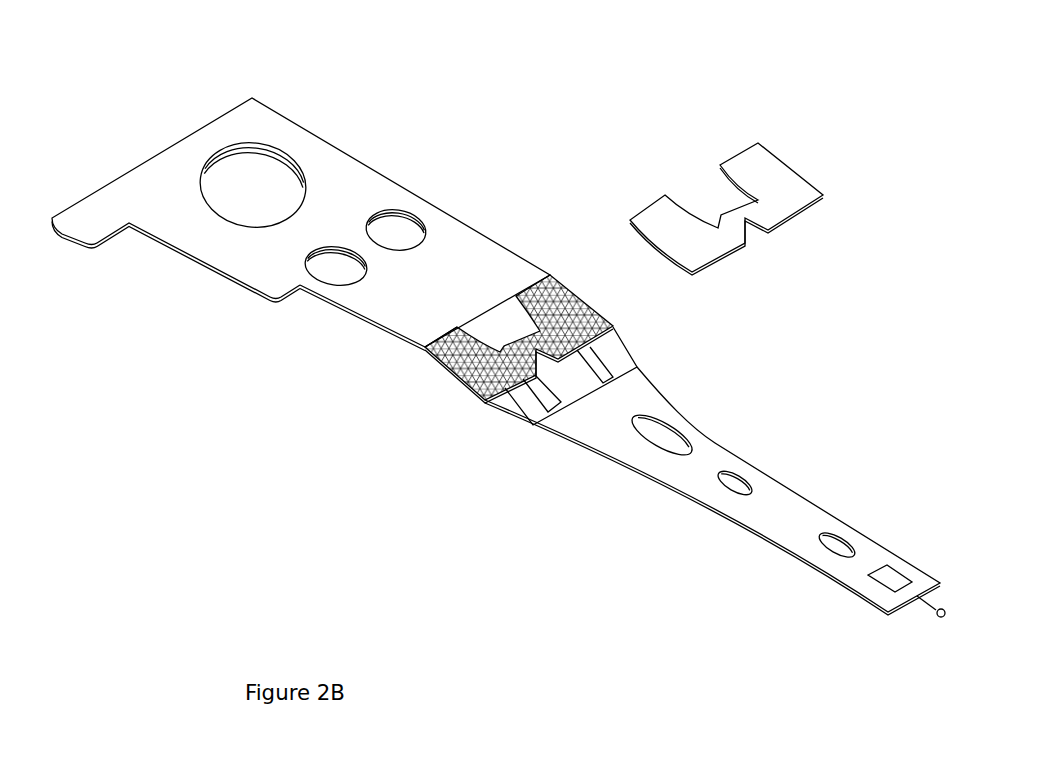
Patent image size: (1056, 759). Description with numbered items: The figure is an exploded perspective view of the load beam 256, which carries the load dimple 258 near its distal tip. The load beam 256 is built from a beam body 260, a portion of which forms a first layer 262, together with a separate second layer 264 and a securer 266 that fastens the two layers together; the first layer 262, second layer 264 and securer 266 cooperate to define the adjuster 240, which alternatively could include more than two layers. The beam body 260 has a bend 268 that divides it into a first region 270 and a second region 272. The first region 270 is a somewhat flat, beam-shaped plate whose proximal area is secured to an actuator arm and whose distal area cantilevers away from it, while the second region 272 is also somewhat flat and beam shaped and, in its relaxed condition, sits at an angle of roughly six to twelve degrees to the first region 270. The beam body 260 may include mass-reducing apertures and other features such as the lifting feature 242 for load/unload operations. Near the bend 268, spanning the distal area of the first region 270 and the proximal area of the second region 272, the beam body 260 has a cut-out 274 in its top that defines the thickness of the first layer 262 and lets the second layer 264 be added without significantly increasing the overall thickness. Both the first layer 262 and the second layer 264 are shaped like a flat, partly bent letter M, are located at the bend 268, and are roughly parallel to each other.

The adjuster 240 is at (777, 292).
The lifting feature 242 is at (949, 611).
The load beam 256 is at (530, 113).
The load dimple 258 is at (881, 569).
The beam body 260 is at (323, 150).
The first layer 262 is at (462, 390).
The second layer 264 is at (772, 156).
The securer 266 is at (562, 278).
The bend 268 is at (448, 380).
The first region 270 is at (393, 305).
The second region 272 is at (680, 470).
The cut-out 274 is at (422, 347).